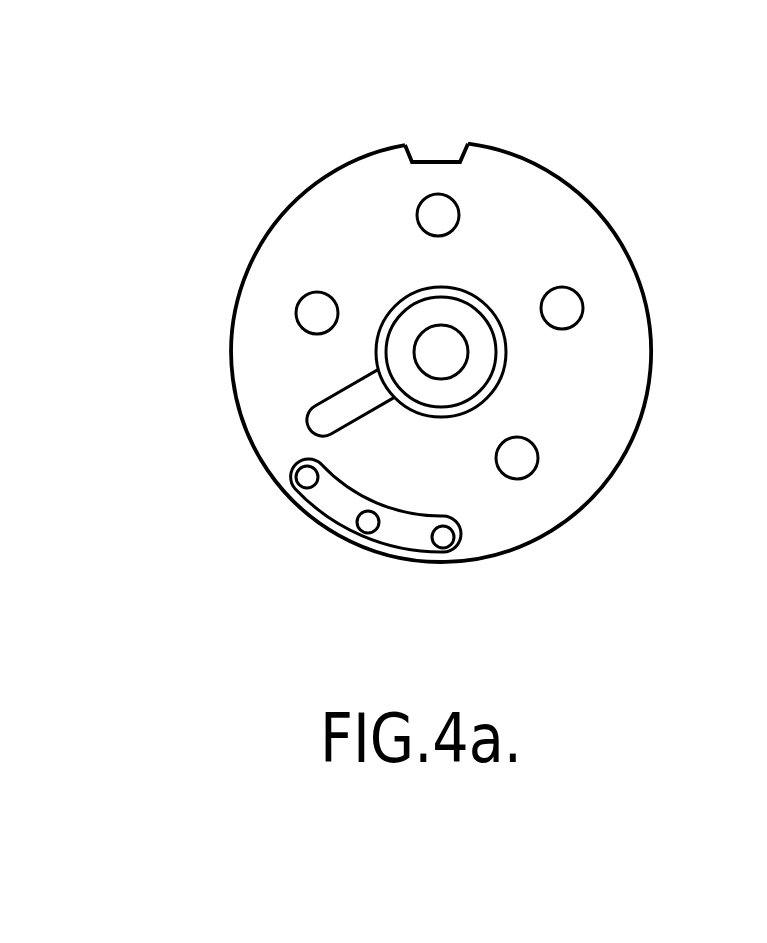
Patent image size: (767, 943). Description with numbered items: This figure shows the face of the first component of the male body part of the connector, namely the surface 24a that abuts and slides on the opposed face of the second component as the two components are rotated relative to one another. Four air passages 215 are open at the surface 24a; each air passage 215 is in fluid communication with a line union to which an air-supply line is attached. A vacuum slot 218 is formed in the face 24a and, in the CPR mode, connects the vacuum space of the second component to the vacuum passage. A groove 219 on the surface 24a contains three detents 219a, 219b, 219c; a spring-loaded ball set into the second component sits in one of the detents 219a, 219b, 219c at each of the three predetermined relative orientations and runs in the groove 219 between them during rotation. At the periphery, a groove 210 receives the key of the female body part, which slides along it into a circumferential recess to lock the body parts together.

The surface 24a is at (573, 174).
The groove 210 is at (450, 150).
The air passage 215 is at (580, 297).
The vacuum slot 218 is at (310, 423).
The groove 219 is at (340, 518).
The detent 219a is at (452, 545).
The detent 219b is at (376, 532).
The detent 219c is at (287, 495).